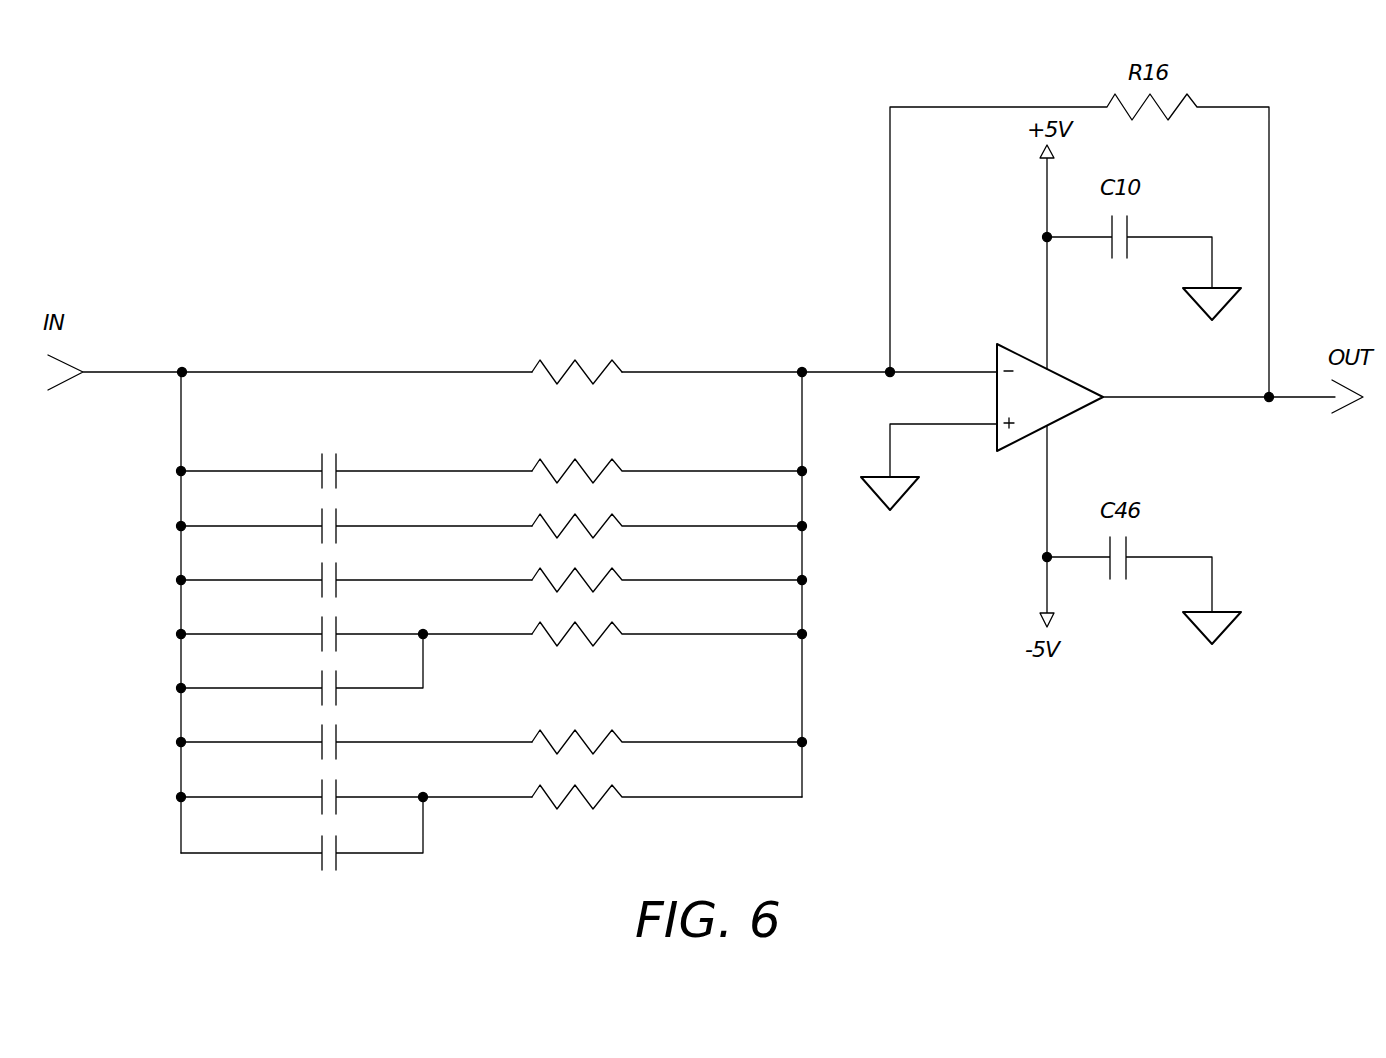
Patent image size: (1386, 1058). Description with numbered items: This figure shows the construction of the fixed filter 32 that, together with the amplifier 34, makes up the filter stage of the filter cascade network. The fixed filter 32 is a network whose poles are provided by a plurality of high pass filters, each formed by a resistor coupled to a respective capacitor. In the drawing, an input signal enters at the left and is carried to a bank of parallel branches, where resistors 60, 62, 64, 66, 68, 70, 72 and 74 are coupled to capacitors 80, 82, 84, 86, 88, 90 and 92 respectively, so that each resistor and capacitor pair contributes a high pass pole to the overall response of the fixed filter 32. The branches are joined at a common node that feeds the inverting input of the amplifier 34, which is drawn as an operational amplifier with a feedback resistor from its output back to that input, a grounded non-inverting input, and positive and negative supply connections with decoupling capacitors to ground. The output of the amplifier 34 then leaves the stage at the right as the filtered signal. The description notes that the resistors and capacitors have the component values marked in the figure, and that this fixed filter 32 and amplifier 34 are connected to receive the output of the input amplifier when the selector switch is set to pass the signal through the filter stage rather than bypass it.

The fixed filter 32 is at (313, 328).
The amplifier 34 is at (1068, 428).
The resistor 60 is at (305, 498).
The resistor 62 is at (305, 553).
The resistor 64 is at (305, 607).
The resistor 66 is at (305, 661).
The resistor 68 is at (305, 715).
The resistor 70 is at (305, 769).
The resistor 72 is at (305, 824).
The resistor 74 is at (312, 867).
The capacitor 80 is at (597, 355).
The capacitor 82 is at (597, 455).
The capacitor 84 is at (597, 508).
The capacitor 86 is at (597, 562).
The capacitor 88 is at (597, 615).
The capacitor 90 is at (597, 724).
The capacitor 92 is at (597, 779).